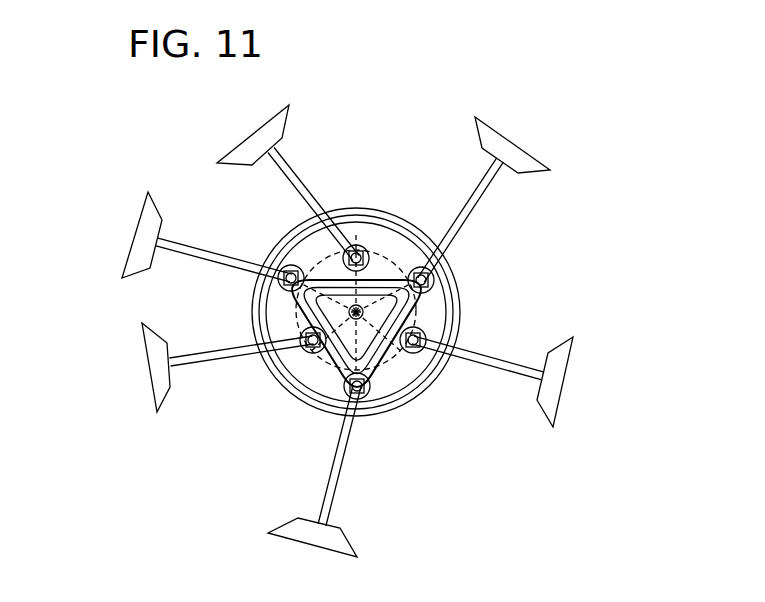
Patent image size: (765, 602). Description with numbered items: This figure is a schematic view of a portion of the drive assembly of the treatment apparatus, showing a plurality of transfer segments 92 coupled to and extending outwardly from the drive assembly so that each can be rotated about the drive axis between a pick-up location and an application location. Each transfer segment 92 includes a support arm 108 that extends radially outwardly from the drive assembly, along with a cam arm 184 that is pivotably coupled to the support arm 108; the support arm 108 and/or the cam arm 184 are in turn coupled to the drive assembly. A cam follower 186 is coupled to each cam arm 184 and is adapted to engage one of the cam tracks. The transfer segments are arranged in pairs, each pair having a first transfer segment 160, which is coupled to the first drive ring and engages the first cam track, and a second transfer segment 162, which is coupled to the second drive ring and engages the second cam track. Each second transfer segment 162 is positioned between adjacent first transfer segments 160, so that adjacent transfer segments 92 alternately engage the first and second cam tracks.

The transfer segment 92 is at (282, 118).
The support arm 108 is at (307, 190).
The first transfer segment 160 is at (185, 258).
The second transfer segment 162 is at (282, 157).
The cam arm 184 is at (368, 246).
The cam follower 186 is at (313, 250).